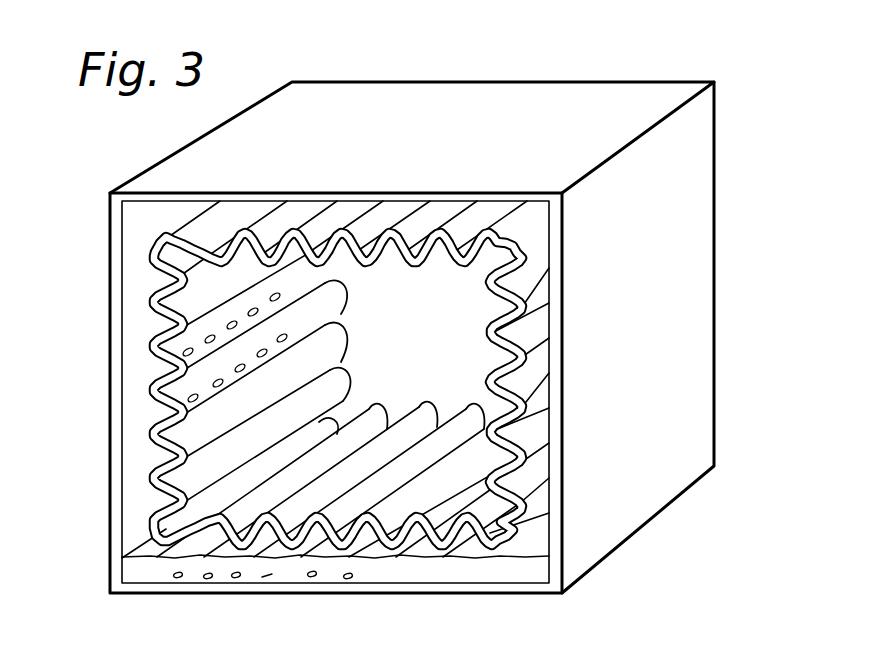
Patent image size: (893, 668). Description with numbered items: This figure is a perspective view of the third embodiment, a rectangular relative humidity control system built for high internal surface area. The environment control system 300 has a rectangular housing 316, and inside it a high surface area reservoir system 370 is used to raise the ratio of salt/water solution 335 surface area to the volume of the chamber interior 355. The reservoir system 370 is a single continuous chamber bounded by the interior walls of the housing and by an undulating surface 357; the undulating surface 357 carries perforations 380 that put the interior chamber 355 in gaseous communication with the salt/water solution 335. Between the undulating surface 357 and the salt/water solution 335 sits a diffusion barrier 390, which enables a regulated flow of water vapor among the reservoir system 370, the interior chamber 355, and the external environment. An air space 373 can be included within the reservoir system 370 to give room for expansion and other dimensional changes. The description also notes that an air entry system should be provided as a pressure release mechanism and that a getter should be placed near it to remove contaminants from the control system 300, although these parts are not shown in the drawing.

The rectangular environment control system 300 is at (733, 227).
The rectangular housing 316 is at (432, 156).
The salt/water solution 335 is at (295, 563).
The chamber interior 355 is at (460, 352).
The undulating surface 357 is at (190, 445).
The high surface area reservoir system 370 is at (160, 572).
The air space 373 is at (368, 545).
The perforations 380 is at (190, 388).
The diffusion barrier 390 is at (185, 366).